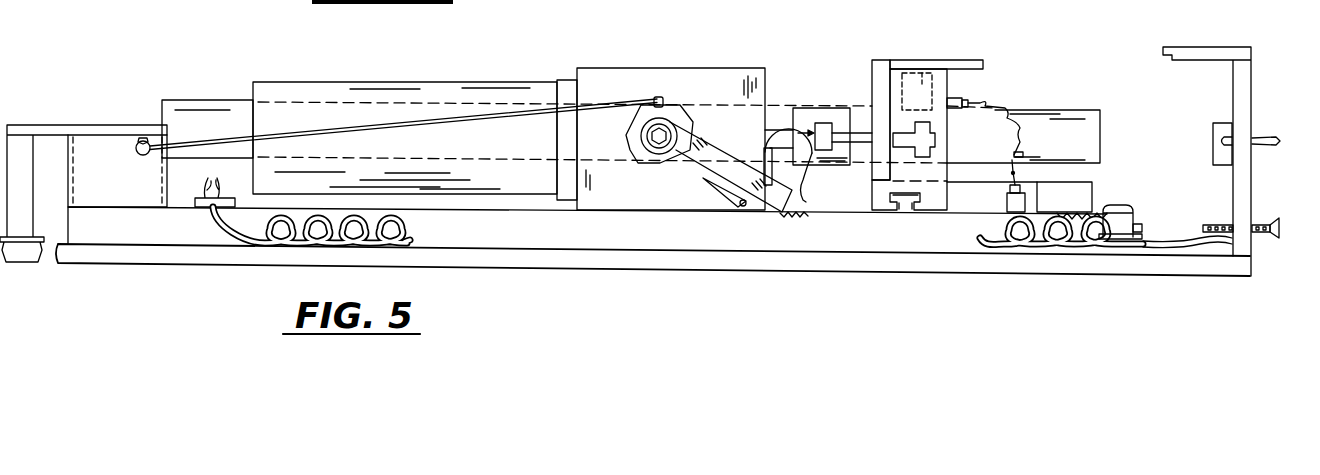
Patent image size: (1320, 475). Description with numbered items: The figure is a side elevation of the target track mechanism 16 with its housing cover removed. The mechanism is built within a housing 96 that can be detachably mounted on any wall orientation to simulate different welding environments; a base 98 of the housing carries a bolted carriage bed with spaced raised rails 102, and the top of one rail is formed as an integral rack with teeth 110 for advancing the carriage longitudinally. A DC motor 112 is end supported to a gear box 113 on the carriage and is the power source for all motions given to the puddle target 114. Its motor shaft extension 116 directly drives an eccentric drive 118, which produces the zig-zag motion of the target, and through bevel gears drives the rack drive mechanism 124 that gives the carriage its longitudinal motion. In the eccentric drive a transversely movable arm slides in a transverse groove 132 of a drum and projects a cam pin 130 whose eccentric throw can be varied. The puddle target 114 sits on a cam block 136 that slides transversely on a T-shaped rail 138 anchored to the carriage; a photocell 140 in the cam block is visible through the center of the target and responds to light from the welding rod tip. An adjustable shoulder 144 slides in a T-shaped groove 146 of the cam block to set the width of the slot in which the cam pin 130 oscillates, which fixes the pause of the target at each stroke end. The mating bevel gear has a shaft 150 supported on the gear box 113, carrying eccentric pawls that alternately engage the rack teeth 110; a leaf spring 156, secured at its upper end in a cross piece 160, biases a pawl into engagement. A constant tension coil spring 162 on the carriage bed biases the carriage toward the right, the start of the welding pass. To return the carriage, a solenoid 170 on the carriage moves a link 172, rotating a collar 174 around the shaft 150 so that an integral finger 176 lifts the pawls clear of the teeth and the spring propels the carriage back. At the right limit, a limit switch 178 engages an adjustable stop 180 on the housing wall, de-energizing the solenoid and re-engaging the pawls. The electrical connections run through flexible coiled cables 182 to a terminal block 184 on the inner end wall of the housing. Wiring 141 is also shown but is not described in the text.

The target track mechanism 16 is at (509, 119).
The housing 96 is at (1253, 84).
The base 98 is at (68, 265).
The raised rails 102 is at (682, 246).
The rack teeth 110 is at (800, 220).
The DC motor 112 is at (497, 151).
The gear box 113 is at (637, 93).
The puddle target 114 is at (957, 60).
The motor shaft extension 116 is at (780, 130).
The eccentric drive 118 is at (801, 94).
The rack drive mechanism 124 is at (690, 161).
The cam pin 130 is at (862, 133).
The transverse groove 132 is at (828, 153).
The cam block 136 is at (877, 202).
The T-shaped rail 138 is at (917, 203).
The photocell 140 is at (937, 88).
The control box with wiring 141 is at (1027, 137).
The adjustable shoulder 144 is at (883, 90).
The T-shaped groove 146 is at (947, 133).
The shaft 150 is at (657, 143).
The leaf spring 156 is at (802, 180).
The cross piece 160 is at (763, 148).
The constant tension coil spring 162 is at (1078, 208).
The solenoid 170 is at (112, 140).
The link 172 is at (376, 128).
The collar 174 is at (636, 134).
The finger 176 is at (723, 198).
The limit switch 178 is at (1109, 205).
The adjustable stop 180 is at (1218, 224).
The flexible coiled cables 182 is at (408, 237).
The terminal block 184 is at (1222, 123).